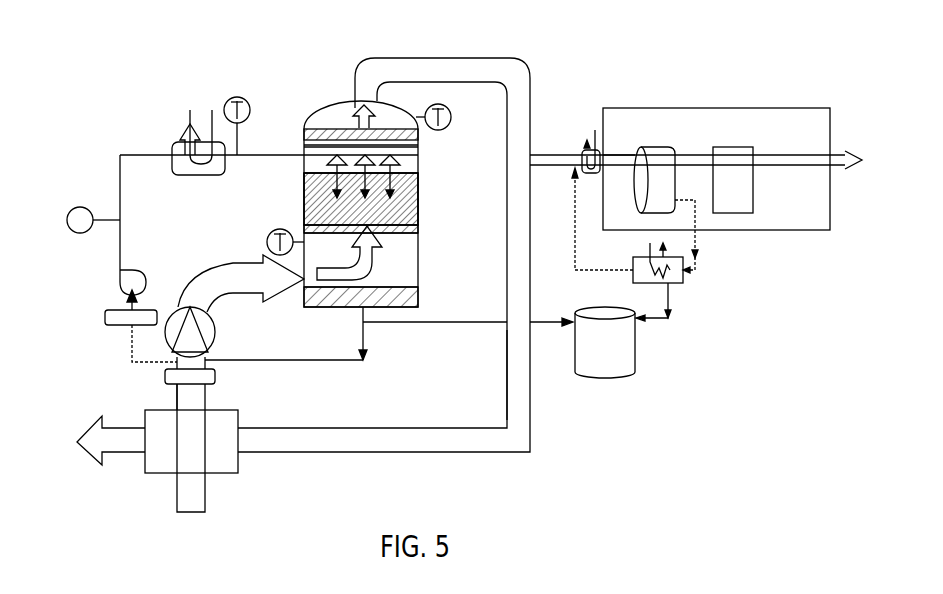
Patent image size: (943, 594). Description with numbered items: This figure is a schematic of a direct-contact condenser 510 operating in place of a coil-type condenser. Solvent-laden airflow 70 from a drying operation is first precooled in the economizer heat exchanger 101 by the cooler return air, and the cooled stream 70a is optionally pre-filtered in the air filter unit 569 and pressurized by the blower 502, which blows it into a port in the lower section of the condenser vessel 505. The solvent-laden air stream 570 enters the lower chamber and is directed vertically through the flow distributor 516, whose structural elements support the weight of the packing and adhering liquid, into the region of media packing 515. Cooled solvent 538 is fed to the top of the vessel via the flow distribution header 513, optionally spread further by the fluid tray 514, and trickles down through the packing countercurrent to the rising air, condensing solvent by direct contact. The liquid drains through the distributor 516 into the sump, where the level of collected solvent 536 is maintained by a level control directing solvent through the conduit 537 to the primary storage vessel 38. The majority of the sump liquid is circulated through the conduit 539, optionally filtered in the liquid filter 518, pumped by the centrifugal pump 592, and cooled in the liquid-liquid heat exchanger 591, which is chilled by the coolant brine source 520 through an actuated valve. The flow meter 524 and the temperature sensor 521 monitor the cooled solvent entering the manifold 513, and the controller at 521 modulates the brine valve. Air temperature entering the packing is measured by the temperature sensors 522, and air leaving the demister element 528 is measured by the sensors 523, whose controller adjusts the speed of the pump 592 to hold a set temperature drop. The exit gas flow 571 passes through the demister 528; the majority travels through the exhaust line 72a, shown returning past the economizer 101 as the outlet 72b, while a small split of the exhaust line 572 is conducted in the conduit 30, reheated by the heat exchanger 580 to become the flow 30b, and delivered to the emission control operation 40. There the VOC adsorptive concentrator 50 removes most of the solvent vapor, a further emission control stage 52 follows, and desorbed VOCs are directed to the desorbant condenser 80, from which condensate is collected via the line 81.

The direct-contact condenser 510 is at (282, 78).
The demister element 528 is at (306, 133).
The flow distribution header 513 is at (350, 153).
The fluid tray 514 is at (306, 165).
The media packing 515 is at (308, 198).
The direct-contact condenser vessel 505 is at (420, 212).
The flow distributor 516 is at (306, 228).
The cooled solvent 538 is at (340, 178).
The exit gas flow 571 is at (352, 111).
The solvent-laden air stream 570 is at (375, 264).
The temperature sensor and PID controller 523 is at (451, 117).
The temperature sensor 522 is at (267, 242).
The exhaust line 572 is at (430, 58).
The exhaust line 72a is at (506, 360).
The economizer heat exchanger 101 is at (240, 460).
The outlet flow 72b is at (100, 422).
The solvent-laden airflow 70 is at (177, 482).
The cooled stream 70a is at (176, 392).
The air filter unit 569 is at (165, 376).
The blower 502 is at (216, 330).
The conduit 539 is at (272, 362).
The collected solvent 536 is at (356, 308).
The conduit 537 is at (470, 324).
The liquid-liquid heat exchanger 591 is at (176, 142).
The coolant brine source 520 is at (200, 108).
The temperature sensor 521 is at (226, 105).
The flow meter 524 is at (66, 220).
The centrifugal pump 592 is at (118, 280).
The liquid filter 518 is at (105, 318).
The emission control operation 40 is at (636, 108).
The conduit 30 is at (562, 155).
The flow 30b is at (628, 155).
The heat exchanger 580 is at (585, 150).
The VOC adsorptive concentrator 50 is at (660, 150).
The emission control stage 52 is at (736, 150).
The desorbant condenser 80 is at (684, 281).
The line 81 is at (672, 302).
The primary storage vessel 38 is at (630, 362).